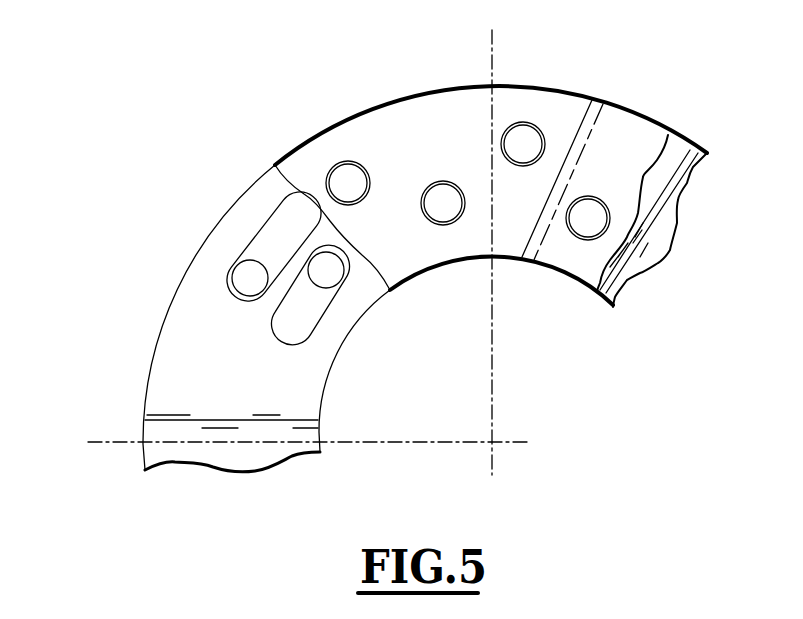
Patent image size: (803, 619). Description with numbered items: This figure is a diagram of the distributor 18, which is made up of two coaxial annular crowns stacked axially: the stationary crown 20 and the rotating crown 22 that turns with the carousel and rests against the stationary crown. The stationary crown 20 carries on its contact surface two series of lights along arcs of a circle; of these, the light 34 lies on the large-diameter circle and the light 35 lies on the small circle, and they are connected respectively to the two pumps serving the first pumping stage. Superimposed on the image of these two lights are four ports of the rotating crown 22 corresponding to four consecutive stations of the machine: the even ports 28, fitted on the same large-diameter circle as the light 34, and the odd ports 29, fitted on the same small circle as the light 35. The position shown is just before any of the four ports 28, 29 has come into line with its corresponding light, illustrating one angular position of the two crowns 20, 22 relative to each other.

The distributor 18 is at (217, 140).
The stationary crown 20 is at (210, 372).
The rotating crown 22 is at (613, 150).
The even ports 28 is at (513, 143).
The odd ports 29 is at (443, 208).
The light 34 is at (273, 247).
The light 35 is at (303, 305).